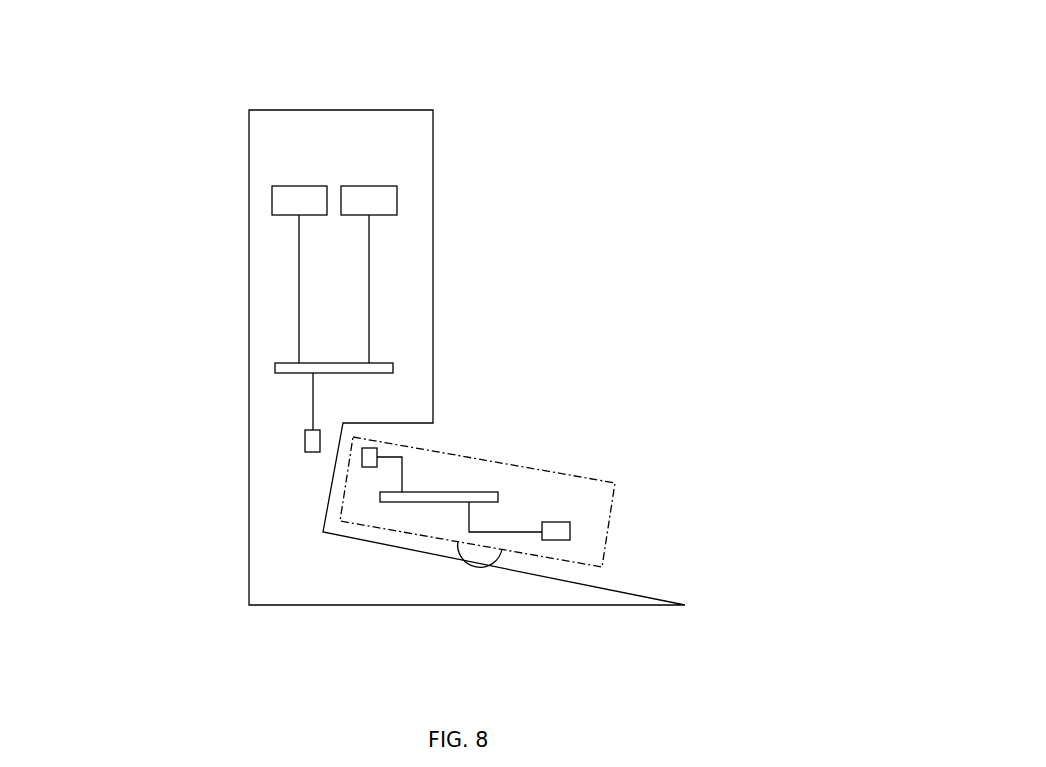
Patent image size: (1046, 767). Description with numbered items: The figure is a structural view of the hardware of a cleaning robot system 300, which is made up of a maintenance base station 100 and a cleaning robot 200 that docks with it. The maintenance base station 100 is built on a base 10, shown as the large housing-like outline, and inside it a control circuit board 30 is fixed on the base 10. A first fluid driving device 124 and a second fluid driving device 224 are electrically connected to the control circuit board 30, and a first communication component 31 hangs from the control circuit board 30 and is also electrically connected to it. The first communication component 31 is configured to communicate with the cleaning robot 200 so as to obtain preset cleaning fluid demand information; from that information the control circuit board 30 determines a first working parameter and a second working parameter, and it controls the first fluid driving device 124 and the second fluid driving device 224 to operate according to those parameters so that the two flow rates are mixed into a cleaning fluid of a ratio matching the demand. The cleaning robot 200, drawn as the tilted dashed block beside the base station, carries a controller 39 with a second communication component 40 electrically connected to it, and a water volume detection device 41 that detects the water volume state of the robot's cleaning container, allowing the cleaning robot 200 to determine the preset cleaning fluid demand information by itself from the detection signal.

The cleaning robot system 300 is at (560, 118).
The base 10 is at (282, 109).
The maintenance base station 100 is at (395, 287).
The first fluid driving device 124 is at (297, 203).
The second fluid driving device 224 is at (356, 200).
The control circuit board 30 is at (286, 365).
The first communication component 31 is at (307, 440).
The cleaning robot 200 is at (510, 513).
The second communication component 40 is at (371, 465).
The controller 39 is at (428, 502).
The water volume detection device 41 is at (558, 540).